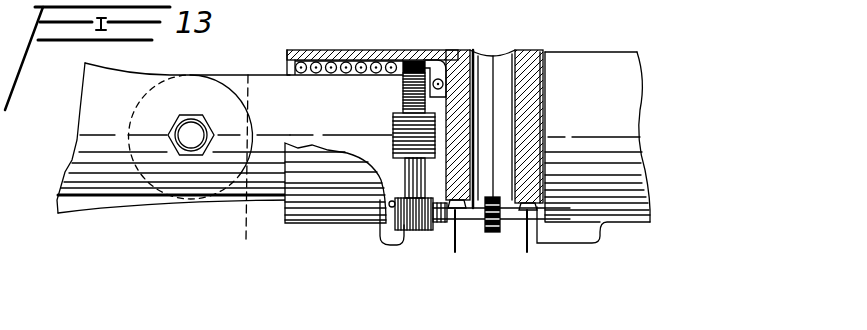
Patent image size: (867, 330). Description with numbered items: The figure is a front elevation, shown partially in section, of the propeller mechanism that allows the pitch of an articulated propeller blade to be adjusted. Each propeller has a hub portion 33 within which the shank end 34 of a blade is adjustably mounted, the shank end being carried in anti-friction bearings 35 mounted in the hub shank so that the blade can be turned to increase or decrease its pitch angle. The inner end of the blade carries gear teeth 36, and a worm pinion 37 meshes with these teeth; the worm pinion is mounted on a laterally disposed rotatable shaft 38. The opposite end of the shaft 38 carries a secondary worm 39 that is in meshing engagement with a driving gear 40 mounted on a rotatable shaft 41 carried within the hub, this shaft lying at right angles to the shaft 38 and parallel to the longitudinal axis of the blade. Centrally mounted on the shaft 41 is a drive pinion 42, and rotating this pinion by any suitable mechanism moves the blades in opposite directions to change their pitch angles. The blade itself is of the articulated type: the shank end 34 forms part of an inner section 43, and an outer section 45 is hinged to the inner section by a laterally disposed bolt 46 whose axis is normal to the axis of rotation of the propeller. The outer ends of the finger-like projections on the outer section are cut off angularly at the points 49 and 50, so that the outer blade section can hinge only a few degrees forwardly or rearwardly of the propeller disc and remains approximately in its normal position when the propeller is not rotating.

The hub portion 33 is at (580, 63).
The shank end 34 is at (392, 55).
The anti-friction bearings 35 is at (338, 95).
The gear teeth 36 is at (460, 50).
The worm pinion 37 is at (396, 127).
The rotatable shaft 38 is at (358, 222).
The secondary worm 39 is at (427, 231).
The driving gear 40 is at (405, 231).
The rotatable shaft 41 is at (470, 221).
The drive pinion 42 is at (497, 231).
The inner section 43 is at (277, 98).
The outer section 45 is at (100, 95).
The bolt 46 is at (192, 143).
The angular cut-off point 49 is at (243, 73).
The angular cut-off point 50 is at (241, 170).